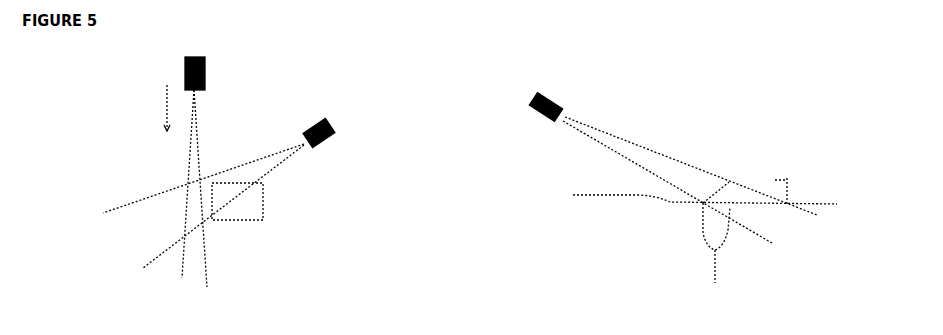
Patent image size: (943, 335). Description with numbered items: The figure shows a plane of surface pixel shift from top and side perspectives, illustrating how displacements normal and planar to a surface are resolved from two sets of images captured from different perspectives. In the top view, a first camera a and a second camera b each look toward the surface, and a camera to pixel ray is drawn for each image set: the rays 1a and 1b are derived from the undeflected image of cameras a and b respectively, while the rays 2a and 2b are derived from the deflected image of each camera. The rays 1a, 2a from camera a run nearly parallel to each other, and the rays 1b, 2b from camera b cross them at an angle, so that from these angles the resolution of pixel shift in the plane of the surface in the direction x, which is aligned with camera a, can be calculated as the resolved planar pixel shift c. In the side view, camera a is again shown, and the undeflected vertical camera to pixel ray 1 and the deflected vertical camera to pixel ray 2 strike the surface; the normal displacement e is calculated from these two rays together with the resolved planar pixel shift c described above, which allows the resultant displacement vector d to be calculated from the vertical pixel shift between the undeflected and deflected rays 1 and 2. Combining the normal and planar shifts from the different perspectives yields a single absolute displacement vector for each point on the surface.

The first camera a is at (374, 101).
The second camera b is at (322, 138).
The resolved planar pixel shift c is at (263, 202).
The direction aligned with the camera x is at (162, 108).
The camera to pixel ray from undeflected image of first camera 1a is at (184, 196).
The camera to pixel ray from deflected image of first camera 2a is at (211, 196).
The camera to pixel ray from undeflected image of second camera 1b is at (194, 185).
The camera to pixel ray from deflected image of second camera 2b is at (209, 214).
The resultant displacement vector d is at (715, 191).
The normal displacement e is at (788, 187).
The undeflected vertical camera to pixel ray 1 is at (672, 190).
The deflected vertical camera to pixel ray 2 is at (698, 173).